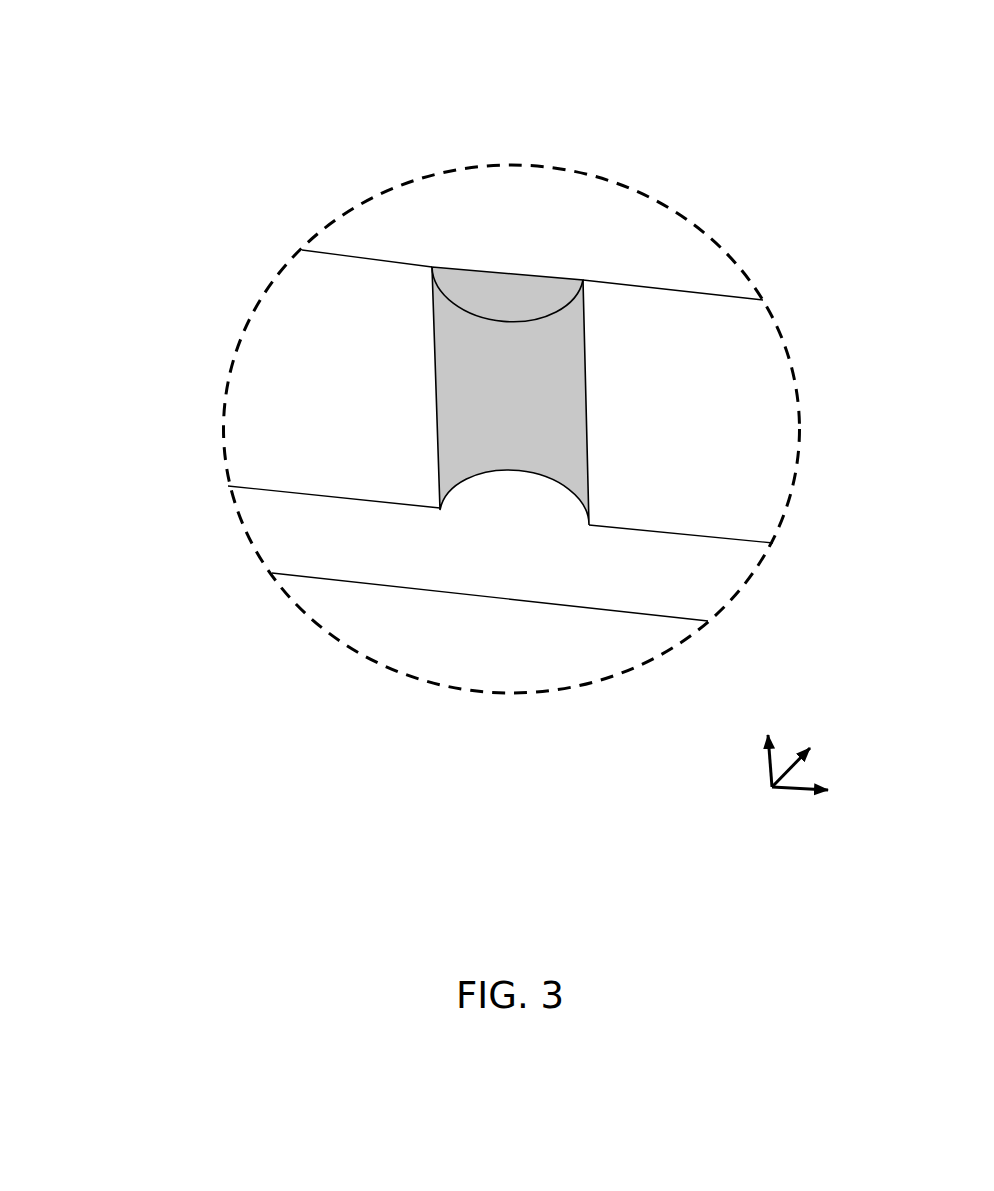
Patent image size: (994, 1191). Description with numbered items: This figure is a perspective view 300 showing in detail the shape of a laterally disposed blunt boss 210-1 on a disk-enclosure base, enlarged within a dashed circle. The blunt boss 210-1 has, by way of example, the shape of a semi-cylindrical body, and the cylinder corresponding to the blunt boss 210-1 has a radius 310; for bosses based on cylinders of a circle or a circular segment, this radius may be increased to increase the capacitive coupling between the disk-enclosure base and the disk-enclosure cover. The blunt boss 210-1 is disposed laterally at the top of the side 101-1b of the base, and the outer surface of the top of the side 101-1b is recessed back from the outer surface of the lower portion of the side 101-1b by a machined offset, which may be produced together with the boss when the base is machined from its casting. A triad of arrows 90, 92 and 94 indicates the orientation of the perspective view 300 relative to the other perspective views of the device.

The perspective view 300 is at (145, 95).
The radius 310 is at (520, 256).
The side 101-1b is at (500, 435).
The laterally disposed blunt boss 210-1 is at (589, 420).
The arrow 90 is at (798, 793).
The arrow 92 is at (790, 762).
The arrow 94 is at (770, 779).